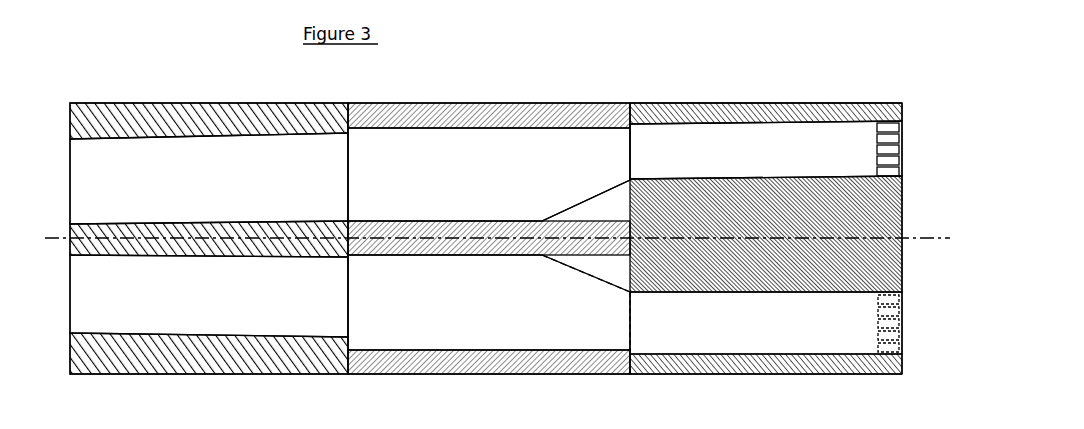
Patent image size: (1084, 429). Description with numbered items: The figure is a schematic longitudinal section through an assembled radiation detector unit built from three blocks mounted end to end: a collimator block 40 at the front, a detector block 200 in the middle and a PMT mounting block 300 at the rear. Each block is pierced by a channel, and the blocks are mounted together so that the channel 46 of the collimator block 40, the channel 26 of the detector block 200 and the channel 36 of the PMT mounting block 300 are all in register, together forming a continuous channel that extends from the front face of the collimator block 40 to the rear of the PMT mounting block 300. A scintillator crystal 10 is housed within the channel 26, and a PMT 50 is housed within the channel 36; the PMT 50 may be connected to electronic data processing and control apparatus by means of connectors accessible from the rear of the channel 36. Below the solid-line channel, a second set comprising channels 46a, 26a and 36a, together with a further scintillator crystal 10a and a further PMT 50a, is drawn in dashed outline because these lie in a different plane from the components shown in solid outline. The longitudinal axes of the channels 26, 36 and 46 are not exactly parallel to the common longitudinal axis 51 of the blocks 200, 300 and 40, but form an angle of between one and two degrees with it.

The collimator block 40 is at (220, 103).
The channel of the collimator block 46 is at (206, 188).
The channel of the collimator block (second plane) 46a is at (222, 306).
The detector block 200 is at (470, 103).
The scintillator crystal 10 is at (489, 186).
The scintillator crystal (second plane) 10a is at (488, 307).
The channel of the detector block 26 is at (620, 212).
The channel of the detector block (second plane) 26a is at (602, 270).
The PMT mounting block 300 is at (708, 103).
The PMT 50 is at (727, 166).
The PMT (second plane) 50a is at (749, 330).
The longitudinal axis 51 is at (913, 237).
The channel of the PMT mounting block 36 is at (904, 156).
The channel of the PMT mounting block (second plane) 36a is at (903, 341).